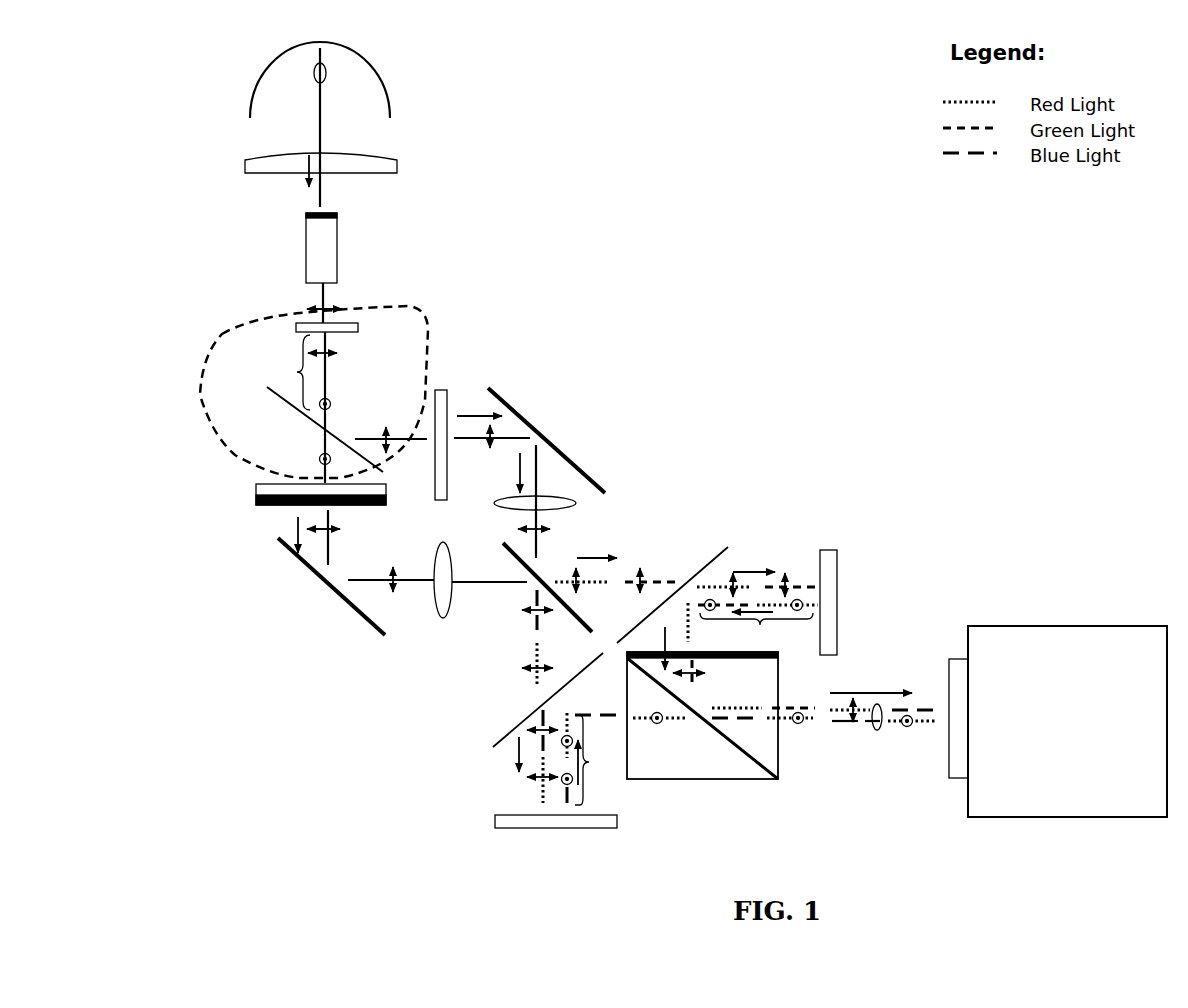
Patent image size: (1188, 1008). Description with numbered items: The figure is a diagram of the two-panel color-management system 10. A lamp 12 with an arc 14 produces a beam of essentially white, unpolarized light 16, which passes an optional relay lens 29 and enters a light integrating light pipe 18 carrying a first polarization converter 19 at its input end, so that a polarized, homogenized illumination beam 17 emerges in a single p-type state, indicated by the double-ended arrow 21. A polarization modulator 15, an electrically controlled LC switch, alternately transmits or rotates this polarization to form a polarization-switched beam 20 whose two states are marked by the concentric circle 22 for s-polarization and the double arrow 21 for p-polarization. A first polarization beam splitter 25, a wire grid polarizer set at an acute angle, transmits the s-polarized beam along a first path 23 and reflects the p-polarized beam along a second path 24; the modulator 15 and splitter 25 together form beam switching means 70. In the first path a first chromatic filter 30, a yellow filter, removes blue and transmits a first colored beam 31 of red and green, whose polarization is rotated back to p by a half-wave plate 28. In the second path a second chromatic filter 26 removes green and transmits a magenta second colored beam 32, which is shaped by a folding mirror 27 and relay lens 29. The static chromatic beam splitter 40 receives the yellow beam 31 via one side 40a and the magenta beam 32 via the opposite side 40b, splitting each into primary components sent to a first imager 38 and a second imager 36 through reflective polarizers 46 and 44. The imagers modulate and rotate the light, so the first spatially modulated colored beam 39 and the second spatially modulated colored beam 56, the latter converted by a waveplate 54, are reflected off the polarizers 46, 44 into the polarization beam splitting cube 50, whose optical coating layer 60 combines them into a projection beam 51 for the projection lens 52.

The two-panel color-management system 10 is at (746, 340).
The lamp 12 is at (313, 66).
The arc 14 is at (372, 62).
The polarization modulator 15 is at (358, 328).
The white light beam 16 is at (323, 104).
The polarized homogenized illumination beam 17 is at (326, 302).
The light integrating light pipe 18 is at (306, 247).
The first polarization converter 19 is at (336, 214).
The polarization-switched beam 20 is at (302, 372).
The double-ended arrow 21 is at (308, 308).
The concentric circle 22 is at (333, 404).
The first path 23 is at (322, 458).
The second path 24 is at (424, 440).
The first polarization beam splitter 25 is at (280, 400).
The second chromatic filter 26 is at (442, 388).
The folding mirror 27 is at (582, 470).
The polarization-rotating half-wave plate 28 is at (255, 505).
The relay lens 29 is at (246, 160).
The first chromatic filter 30 is at (257, 485).
The first colored beam 31 is at (330, 555).
The second colored beam 32 is at (480, 440).
The second imager 36 is at (830, 549).
The first imager 38 is at (496, 827).
The first spatially modulated colored beam 39 is at (591, 760).
The static chromatic beam splitter 40 is at (513, 560).
The side of the beam splitter 40a is at (574, 626).
The opposite side of the beam splitter 40b is at (592, 597).
The reflective polarizer 44 is at (713, 550).
The reflective polarizer 46 is at (510, 726).
The polarization beam splitting cube 50 is at (673, 780).
The projection beam 51 is at (878, 731).
The projection lens 52 is at (1115, 626).
The waveplate 54 is at (626, 653).
The second spatially modulated colored beam 56 is at (762, 622).
The optical coating layer 60 is at (770, 766).
The beam switching means 70 is at (222, 334).